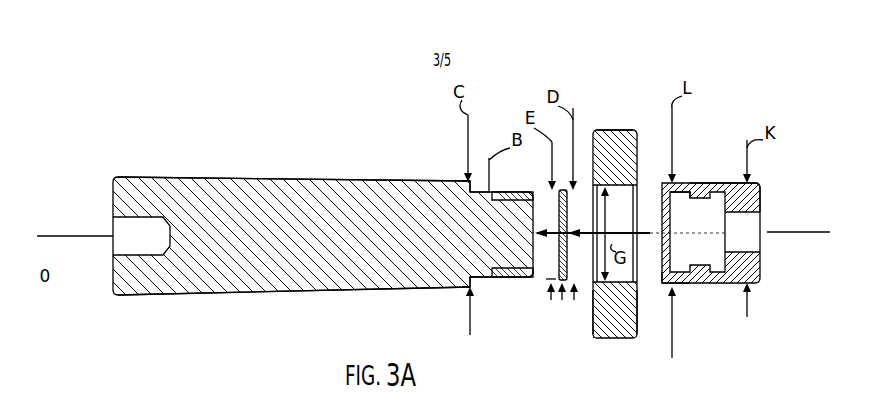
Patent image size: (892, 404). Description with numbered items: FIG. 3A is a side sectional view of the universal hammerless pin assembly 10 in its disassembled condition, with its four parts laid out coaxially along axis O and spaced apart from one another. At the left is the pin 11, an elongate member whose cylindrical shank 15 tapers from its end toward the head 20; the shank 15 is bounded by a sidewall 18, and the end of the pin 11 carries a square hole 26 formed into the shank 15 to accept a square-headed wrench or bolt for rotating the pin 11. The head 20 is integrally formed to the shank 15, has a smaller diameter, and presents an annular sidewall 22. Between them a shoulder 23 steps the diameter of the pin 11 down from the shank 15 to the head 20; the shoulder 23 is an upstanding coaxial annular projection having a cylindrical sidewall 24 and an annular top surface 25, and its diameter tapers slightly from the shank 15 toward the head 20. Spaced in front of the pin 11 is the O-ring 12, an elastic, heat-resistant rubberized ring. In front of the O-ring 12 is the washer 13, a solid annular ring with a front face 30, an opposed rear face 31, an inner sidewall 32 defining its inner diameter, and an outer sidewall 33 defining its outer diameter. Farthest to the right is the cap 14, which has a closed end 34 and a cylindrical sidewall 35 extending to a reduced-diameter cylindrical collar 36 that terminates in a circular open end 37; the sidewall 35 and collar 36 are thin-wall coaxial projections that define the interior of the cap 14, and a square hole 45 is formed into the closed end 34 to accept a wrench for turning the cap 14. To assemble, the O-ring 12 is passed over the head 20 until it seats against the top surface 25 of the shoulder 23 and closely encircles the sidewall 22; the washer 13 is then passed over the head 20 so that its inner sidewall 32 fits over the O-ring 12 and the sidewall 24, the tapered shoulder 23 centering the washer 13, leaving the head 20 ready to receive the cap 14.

The universal hammerless pin assembly 10 is at (770, 66).
The pin 11 is at (195, 294).
The O-ring 12 is at (562, 300).
The washer 13 is at (613, 342).
The cap 14 is at (718, 289).
The shank 15 is at (318, 178).
The sidewall 18 is at (372, 290).
The head 20 is at (490, 281).
The annular sidewall 22 is at (506, 192).
The shoulder 23 is at (467, 285).
The cylindrical sidewall 24 is at (466, 185).
The annular top surface 25 is at (476, 192).
The square hole 26 is at (113, 237).
The front face 30 is at (636, 332).
The rear face 31 is at (592, 335).
The inner sidewall 32 is at (616, 188).
The outer sidewall 33 is at (614, 130).
The closed end 34 is at (762, 192).
The cylindrical sidewall 35 is at (712, 182).
The collar 36 is at (677, 183).
The open end 37 is at (666, 283).
The square hole 45 is at (750, 232).